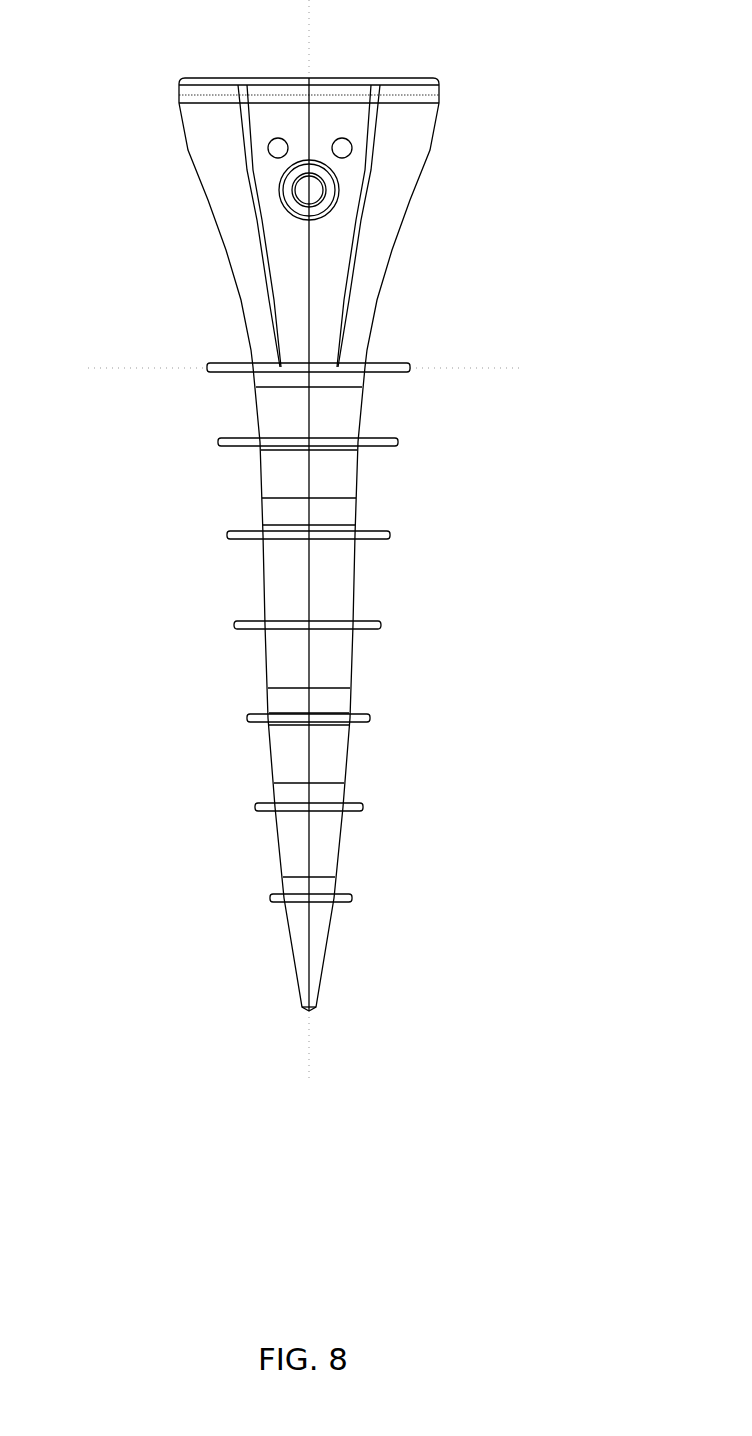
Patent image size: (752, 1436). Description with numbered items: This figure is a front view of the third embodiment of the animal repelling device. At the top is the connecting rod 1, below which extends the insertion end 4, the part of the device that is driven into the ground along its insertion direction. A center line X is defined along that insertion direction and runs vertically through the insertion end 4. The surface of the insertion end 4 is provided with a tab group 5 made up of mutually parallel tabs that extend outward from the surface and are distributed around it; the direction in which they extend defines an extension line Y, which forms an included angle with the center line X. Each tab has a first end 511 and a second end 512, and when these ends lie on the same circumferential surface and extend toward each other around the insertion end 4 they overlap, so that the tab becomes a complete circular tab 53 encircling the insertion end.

The connecting rod 1 is at (382, 223).
The insertion end 4 is at (327, 585).
The tab group 5 is at (310, 624).
The complete circular tab 53 is at (218, 368).
The first end 511 is at (375, 625).
The second end 512 is at (375, 625).
The center line X is at (309, 1045).
The extension line Y is at (169, 368).